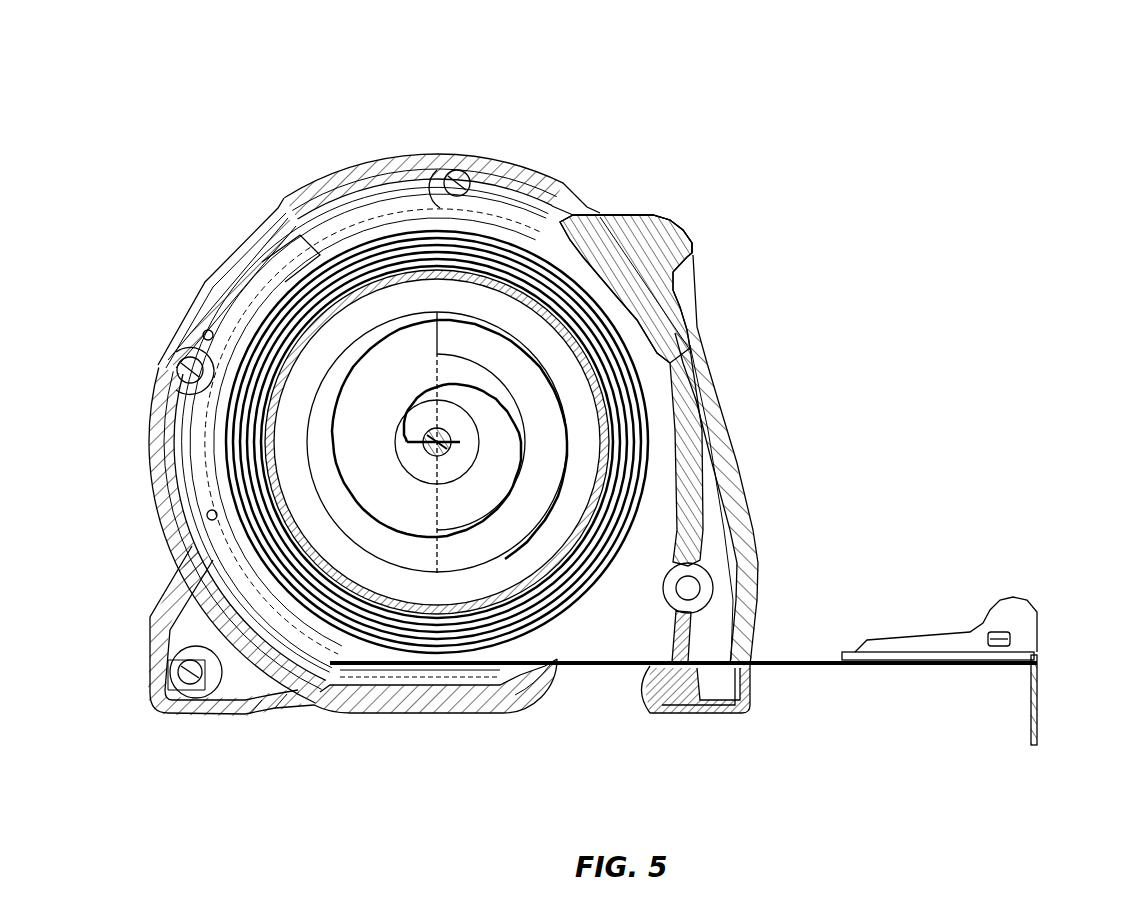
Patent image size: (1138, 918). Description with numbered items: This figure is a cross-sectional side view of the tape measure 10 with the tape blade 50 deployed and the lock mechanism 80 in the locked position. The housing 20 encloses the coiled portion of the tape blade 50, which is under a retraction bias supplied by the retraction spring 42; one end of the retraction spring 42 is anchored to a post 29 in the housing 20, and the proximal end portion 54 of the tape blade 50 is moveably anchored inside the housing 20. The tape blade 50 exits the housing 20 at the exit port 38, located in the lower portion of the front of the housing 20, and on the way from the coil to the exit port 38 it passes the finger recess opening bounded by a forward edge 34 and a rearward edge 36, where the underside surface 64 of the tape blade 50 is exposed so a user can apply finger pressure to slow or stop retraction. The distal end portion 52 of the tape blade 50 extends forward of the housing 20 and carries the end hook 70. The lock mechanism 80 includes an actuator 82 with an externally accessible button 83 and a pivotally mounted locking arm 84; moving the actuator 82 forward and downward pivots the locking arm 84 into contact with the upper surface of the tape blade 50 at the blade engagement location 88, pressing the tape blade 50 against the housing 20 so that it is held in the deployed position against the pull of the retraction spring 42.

The tape measure 10 is at (590, 97).
The housing 20 is at (255, 227).
The post 29 is at (445, 440).
The forward edge 34 is at (651, 665).
The rearward edge 36 is at (557, 668).
The exit port 38 is at (762, 652).
The retraction spring 42 is at (330, 442).
The tape blade 50 is at (810, 667).
The distal end portion 52 is at (1000, 667).
The proximal end portion 54 is at (320, 677).
The underside surface 64 is at (923, 667).
The end hook 70 is at (1042, 698).
The lock mechanism 80 is at (729, 276).
The actuator 82 is at (627, 250).
The button 83 is at (690, 237).
The locking arm 84 is at (712, 572).
The blade engagement location 88 is at (690, 684).